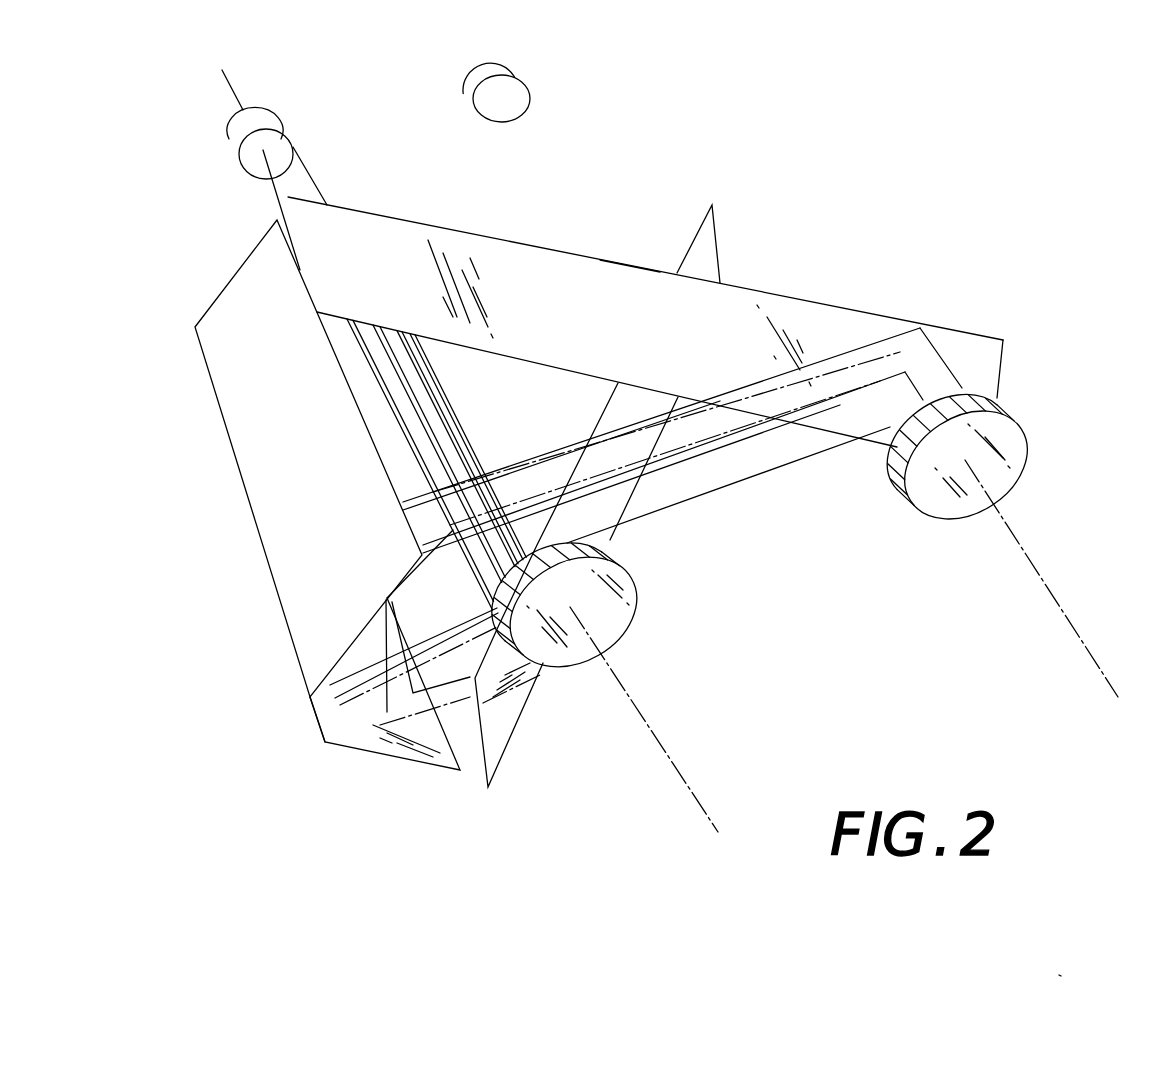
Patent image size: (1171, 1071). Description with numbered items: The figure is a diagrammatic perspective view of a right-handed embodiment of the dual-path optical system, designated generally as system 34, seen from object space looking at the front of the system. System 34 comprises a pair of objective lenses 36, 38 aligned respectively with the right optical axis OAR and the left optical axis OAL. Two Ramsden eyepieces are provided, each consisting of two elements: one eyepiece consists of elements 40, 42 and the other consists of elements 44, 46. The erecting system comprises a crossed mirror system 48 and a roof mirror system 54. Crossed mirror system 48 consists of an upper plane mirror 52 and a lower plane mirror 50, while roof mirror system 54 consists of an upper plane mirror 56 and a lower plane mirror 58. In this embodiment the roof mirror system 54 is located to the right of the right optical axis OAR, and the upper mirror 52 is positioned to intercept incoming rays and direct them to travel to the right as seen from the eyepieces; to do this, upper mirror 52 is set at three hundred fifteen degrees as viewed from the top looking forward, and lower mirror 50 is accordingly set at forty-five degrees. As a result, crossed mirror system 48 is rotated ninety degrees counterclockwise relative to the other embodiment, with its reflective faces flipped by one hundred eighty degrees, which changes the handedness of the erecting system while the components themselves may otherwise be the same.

The dual-path optical system 34 is at (724, 177).
The objective lens 36 is at (1027, 432).
The objective lens 38 is at (632, 620).
The eyepiece element 40 is at (513, 63).
The eyepiece element 42 is at (530, 119).
The eyepiece element 44 is at (279, 117).
The eyepiece element 46 is at (295, 140).
The crossed mirror system 48 is at (653, 271).
The lower plane mirror 50 is at (720, 272).
The upper plane mirror 52 is at (810, 300).
The roof mirror system 54 is at (290, 656).
The upper plane mirror 56 is at (320, 650).
The lower plane mirror 58 is at (403, 757).
The right optical axis OAR is at (664, 744).
The left optical axis OAL is at (1061, 606).